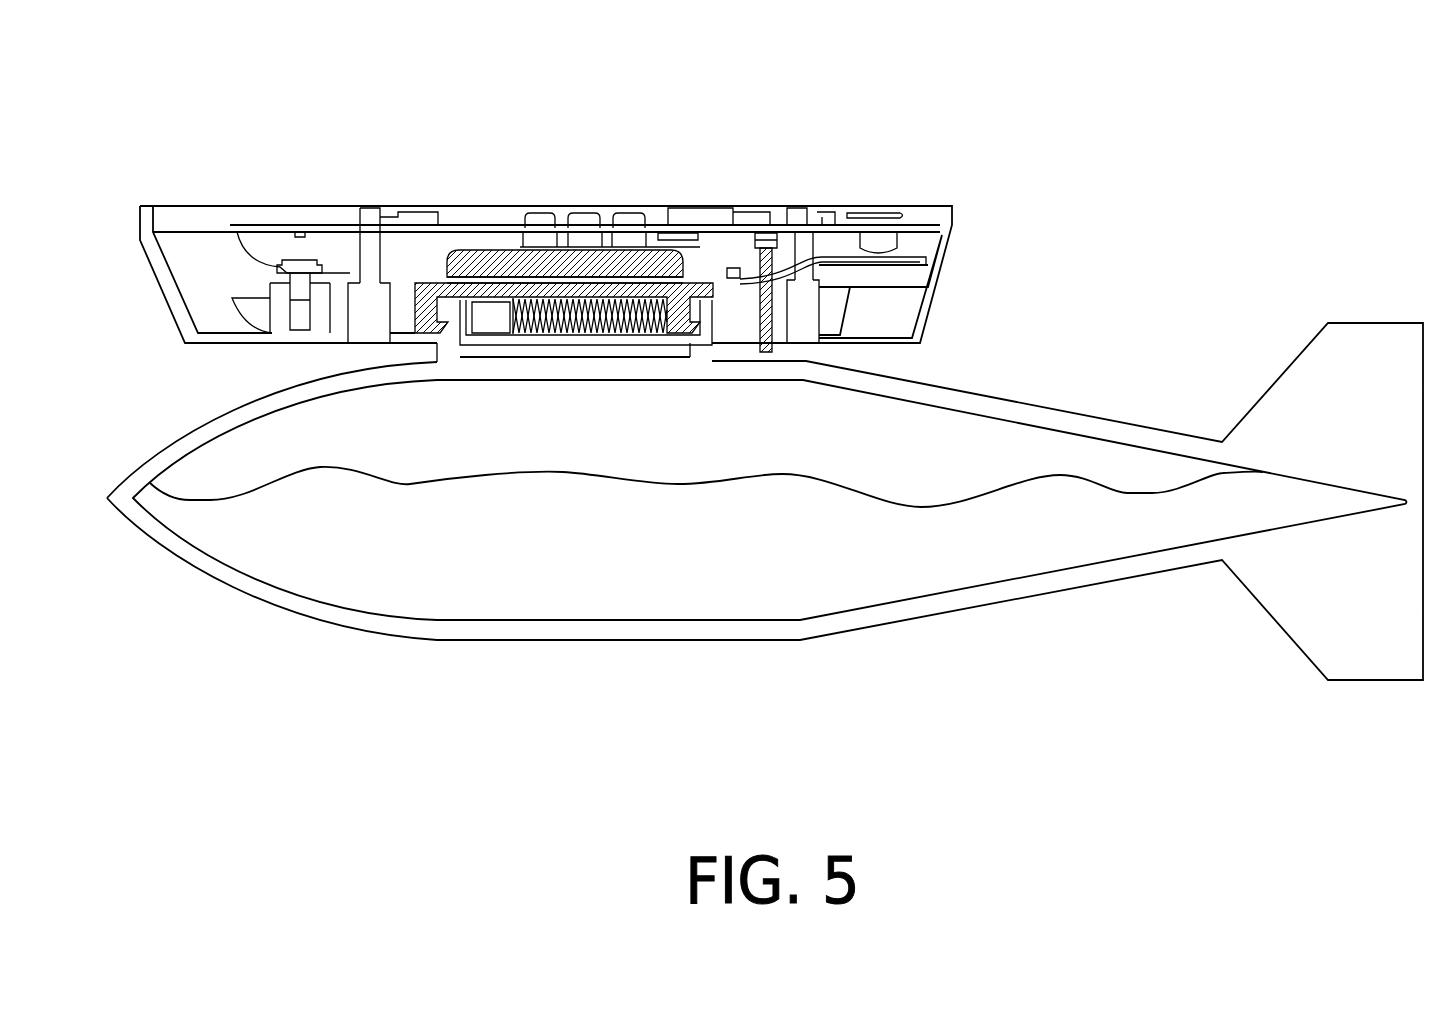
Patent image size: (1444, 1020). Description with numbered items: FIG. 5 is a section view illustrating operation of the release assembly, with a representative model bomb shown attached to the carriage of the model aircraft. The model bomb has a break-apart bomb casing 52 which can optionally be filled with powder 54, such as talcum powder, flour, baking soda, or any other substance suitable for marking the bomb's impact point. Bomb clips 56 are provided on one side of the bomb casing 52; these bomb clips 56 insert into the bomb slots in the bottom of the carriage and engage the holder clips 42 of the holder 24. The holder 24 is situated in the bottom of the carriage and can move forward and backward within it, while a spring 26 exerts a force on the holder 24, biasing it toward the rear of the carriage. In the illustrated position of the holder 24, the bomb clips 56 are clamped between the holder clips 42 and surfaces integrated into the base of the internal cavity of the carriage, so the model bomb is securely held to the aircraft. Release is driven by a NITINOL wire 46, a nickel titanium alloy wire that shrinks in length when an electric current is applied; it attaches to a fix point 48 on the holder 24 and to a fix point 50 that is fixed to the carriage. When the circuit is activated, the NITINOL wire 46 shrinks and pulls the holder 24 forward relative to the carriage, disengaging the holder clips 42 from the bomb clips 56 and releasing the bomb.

The holder 24 is at (635, 265).
The spring 26 is at (657, 295).
The holder clips 42 is at (665, 310).
The NITINOL wire 46 is at (333, 266).
The fix point 48 is at (733, 272).
The fix point 50 is at (756, 247).
The bomb casing 52 is at (678, 627).
The powder 54 is at (387, 542).
The bomb clips 56 is at (695, 345).